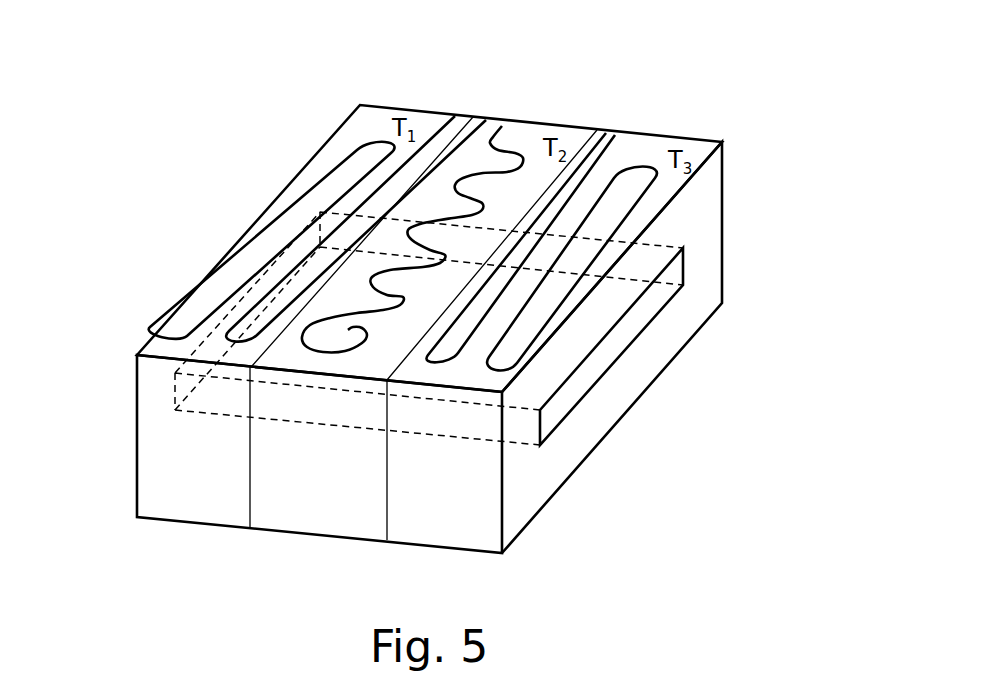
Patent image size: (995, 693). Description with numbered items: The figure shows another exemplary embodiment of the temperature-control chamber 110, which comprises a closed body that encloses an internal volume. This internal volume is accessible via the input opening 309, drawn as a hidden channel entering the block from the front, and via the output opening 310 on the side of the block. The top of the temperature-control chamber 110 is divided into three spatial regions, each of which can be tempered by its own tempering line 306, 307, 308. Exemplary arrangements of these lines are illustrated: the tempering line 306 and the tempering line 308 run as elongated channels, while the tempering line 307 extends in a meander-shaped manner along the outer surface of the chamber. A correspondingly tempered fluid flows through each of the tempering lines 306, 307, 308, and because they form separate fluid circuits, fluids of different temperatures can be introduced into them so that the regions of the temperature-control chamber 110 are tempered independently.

The temperature-control chamber 110 is at (766, 131).
The tempering line 306 is at (287, 230).
The tempering line 307 is at (500, 132).
The tempering line 308 is at (643, 167).
The input opening 309 is at (188, 362).
The output opening 310 is at (590, 372).